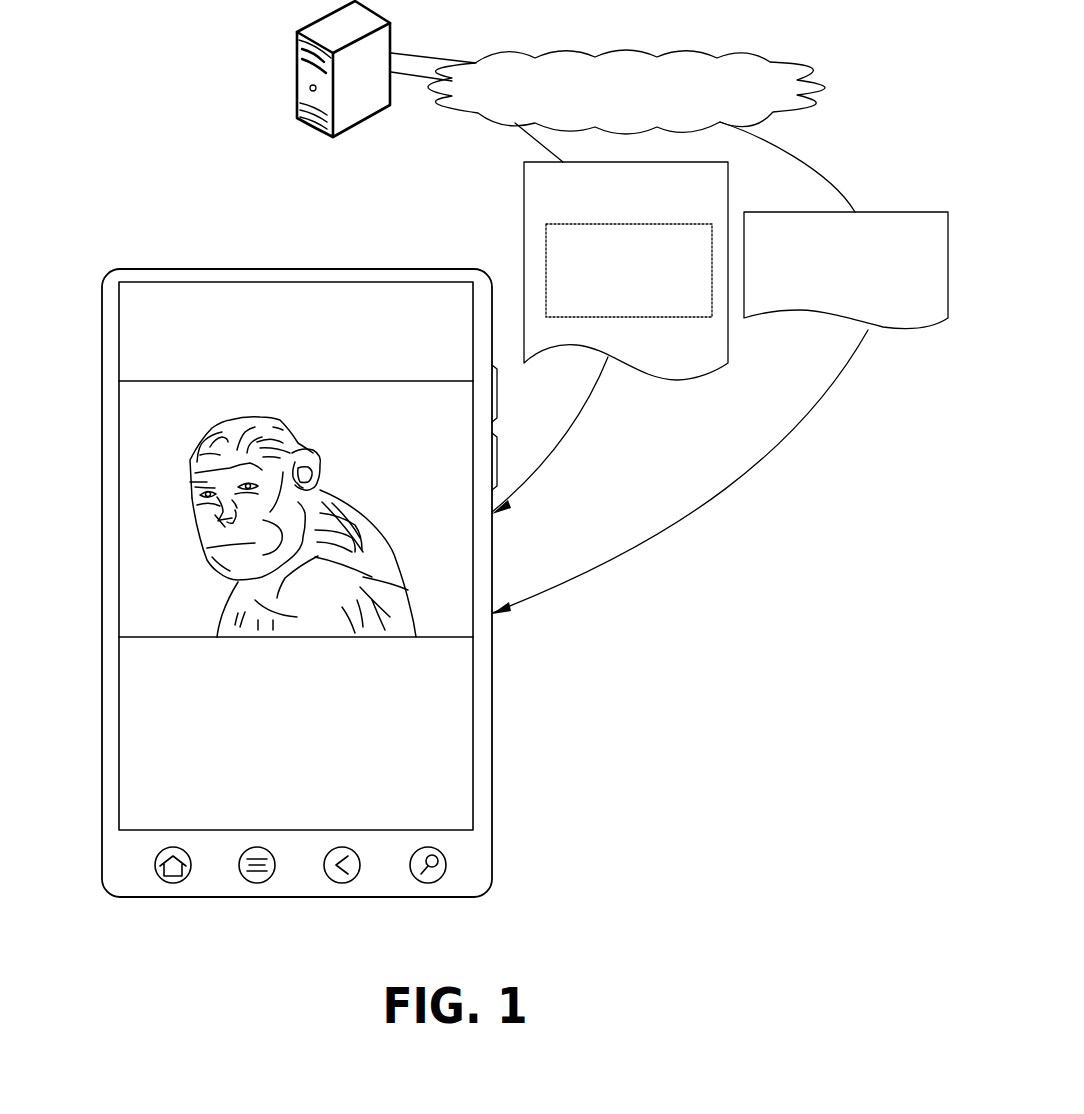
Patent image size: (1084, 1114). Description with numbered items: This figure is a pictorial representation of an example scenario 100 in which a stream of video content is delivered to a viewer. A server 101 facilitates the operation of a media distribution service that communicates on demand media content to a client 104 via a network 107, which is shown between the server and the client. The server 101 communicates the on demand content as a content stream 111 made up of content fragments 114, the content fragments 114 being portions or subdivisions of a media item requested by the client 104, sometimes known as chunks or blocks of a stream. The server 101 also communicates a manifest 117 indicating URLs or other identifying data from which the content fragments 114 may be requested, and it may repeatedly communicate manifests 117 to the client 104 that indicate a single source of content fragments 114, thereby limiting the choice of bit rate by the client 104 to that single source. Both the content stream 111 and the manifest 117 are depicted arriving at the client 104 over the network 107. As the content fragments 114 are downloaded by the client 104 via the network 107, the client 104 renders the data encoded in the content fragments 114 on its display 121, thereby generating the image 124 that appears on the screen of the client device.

The networked environment 100 is at (683, 843).
The server 101 is at (297, 85).
The client 104 is at (253, 268).
The network 107 is at (641, 131).
The content stream 111 is at (610, 338).
The content fragments 114 is at (629, 270).
The manifest 117 is at (720, 413).
The display 121 is at (187, 313).
The image 124 is at (158, 600).